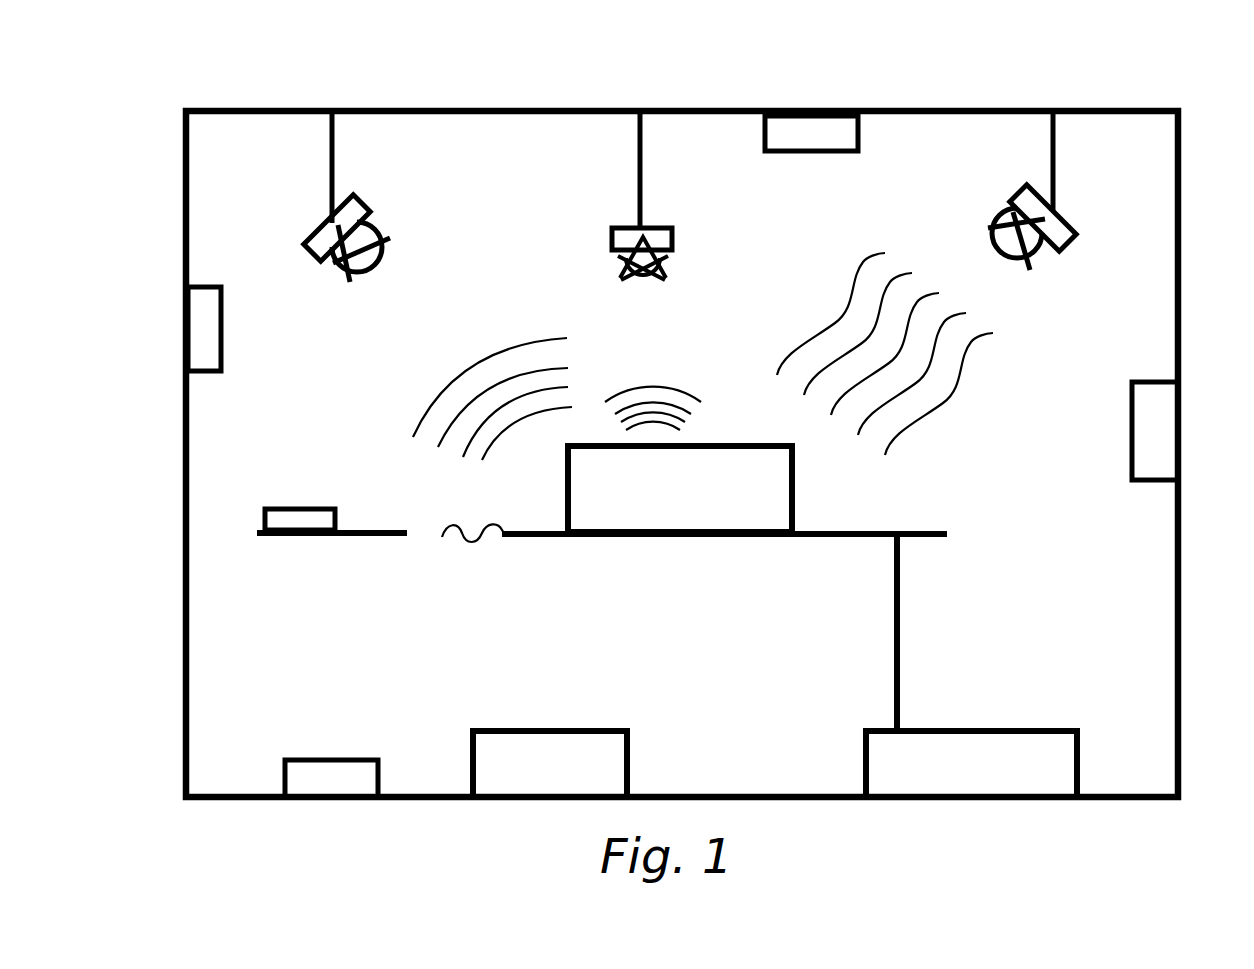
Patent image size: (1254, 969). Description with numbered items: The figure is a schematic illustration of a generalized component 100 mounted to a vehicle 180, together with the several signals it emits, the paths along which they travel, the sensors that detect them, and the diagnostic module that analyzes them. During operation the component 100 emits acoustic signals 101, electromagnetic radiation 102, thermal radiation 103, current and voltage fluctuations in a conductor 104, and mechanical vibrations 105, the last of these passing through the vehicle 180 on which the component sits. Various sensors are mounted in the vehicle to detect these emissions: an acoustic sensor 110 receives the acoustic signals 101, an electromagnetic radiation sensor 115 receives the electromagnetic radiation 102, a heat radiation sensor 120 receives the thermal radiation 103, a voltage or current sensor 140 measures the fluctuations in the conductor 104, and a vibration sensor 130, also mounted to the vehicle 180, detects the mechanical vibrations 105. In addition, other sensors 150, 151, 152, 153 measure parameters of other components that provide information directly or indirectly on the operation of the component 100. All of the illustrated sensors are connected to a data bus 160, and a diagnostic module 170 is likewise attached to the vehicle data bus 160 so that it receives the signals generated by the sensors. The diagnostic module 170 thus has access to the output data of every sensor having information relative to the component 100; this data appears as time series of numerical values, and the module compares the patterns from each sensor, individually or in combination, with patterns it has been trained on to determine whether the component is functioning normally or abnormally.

The component 100 is at (648, 527).
The acoustic signals 101 is at (492, 399).
The electromagnetic radiation 102 is at (653, 398).
The thermal radiation 103 is at (885, 354).
The conductor 104 is at (900, 620).
The mechanical vibrations 105 is at (461, 519).
The acoustic sensor 110 is at (322, 227).
The electromagnetic radiation sensor 115 is at (613, 223).
The heat radiation sensor 120 is at (1067, 220).
The vibration sensor 130 is at (313, 535).
The voltage or current sensor 140 is at (973, 726).
The other sensor 150 is at (1130, 460).
The other sensor 151 is at (802, 152).
The other sensor 152 is at (223, 328).
The other sensor 153 is at (330, 778).
The data bus 160 is at (532, 108).
The diagnostic module 170 is at (553, 735).
The vehicle 180 is at (552, 537).